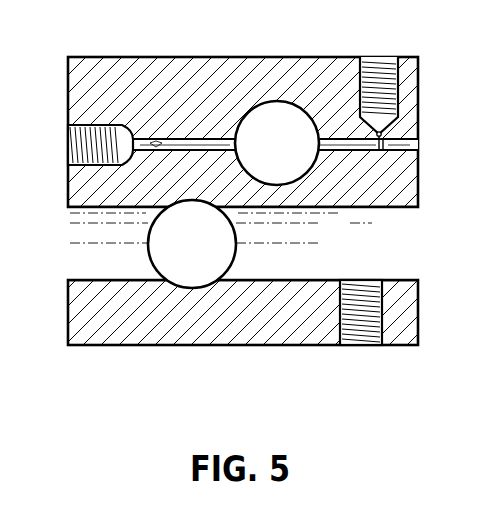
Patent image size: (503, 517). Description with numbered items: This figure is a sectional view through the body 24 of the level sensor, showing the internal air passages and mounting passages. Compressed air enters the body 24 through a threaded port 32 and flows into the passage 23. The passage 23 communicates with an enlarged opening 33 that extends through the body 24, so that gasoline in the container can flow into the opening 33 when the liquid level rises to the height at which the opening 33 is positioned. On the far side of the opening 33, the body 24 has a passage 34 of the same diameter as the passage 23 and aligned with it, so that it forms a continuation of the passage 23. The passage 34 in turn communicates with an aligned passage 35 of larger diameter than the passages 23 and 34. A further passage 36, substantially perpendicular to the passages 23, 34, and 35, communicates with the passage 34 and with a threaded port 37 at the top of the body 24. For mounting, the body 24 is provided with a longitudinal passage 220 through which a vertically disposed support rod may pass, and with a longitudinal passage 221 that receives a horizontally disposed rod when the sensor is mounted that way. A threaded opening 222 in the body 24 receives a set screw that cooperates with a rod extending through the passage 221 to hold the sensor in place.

The passage 23 is at (172, 139).
The body 24 is at (66, 322).
The threaded port 32 is at (80, 152).
The enlarged opening 33 is at (280, 101).
The passage 34 is at (362, 148).
The passage 35 is at (407, 145).
The passage 36 is at (384, 126).
The threaded port 37 is at (388, 66).
The longitudinal passage 220 is at (188, 287).
The longitudinal passage 221 is at (398, 209).
The threaded opening 222 is at (359, 346).